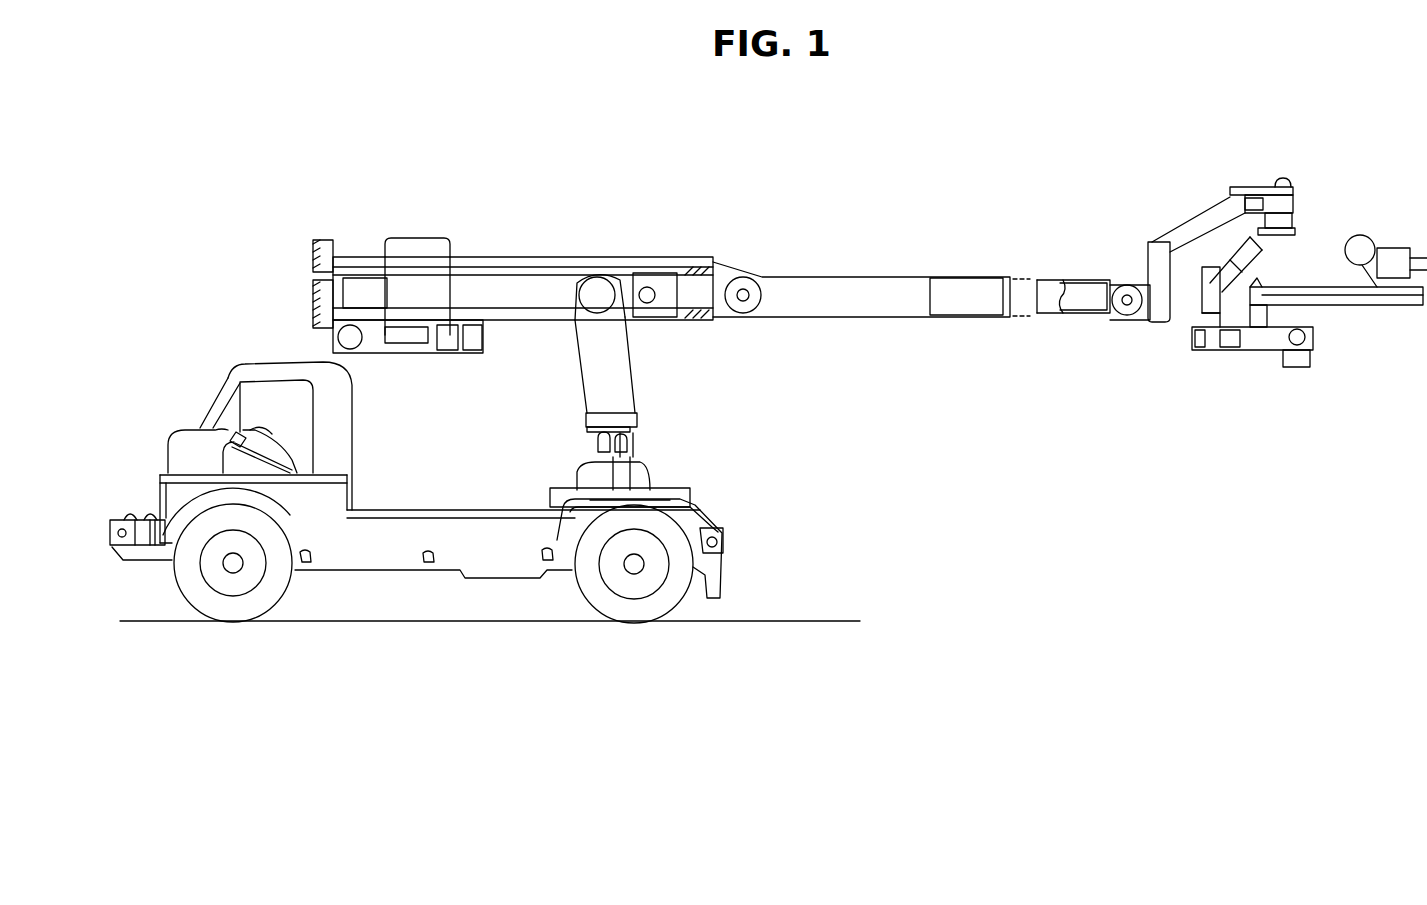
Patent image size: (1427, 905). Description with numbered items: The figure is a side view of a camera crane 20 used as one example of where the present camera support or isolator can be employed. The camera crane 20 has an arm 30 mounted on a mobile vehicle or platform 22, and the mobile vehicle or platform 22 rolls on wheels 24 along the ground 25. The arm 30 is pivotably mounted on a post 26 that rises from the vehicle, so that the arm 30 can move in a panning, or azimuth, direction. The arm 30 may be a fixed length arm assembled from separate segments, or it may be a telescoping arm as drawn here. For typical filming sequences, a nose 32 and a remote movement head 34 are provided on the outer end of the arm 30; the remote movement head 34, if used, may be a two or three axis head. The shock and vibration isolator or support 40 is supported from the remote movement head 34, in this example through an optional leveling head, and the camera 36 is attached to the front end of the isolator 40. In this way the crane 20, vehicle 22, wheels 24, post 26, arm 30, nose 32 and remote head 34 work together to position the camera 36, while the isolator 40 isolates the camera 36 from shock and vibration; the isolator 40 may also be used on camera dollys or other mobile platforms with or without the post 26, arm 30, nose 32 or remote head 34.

The camera crane 20 is at (565, 238).
The mobile vehicle or platform 22 is at (420, 505).
The wheels 24 is at (235, 612).
The ground surface 25 is at (807, 618).
The post 26 is at (640, 442).
The arm 30 is at (673, 255).
The nose 32 is at (1177, 237).
The remote movement head 34 is at (1233, 275).
The camera 36 is at (1398, 257).
The shock and vibration isolator 40 is at (1383, 307).